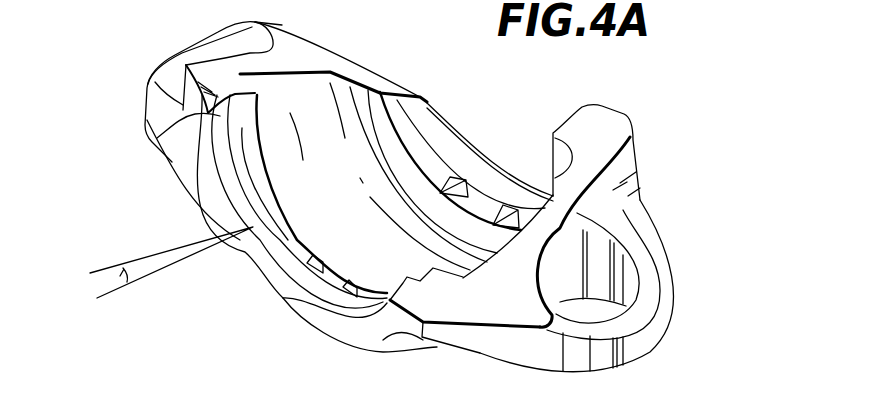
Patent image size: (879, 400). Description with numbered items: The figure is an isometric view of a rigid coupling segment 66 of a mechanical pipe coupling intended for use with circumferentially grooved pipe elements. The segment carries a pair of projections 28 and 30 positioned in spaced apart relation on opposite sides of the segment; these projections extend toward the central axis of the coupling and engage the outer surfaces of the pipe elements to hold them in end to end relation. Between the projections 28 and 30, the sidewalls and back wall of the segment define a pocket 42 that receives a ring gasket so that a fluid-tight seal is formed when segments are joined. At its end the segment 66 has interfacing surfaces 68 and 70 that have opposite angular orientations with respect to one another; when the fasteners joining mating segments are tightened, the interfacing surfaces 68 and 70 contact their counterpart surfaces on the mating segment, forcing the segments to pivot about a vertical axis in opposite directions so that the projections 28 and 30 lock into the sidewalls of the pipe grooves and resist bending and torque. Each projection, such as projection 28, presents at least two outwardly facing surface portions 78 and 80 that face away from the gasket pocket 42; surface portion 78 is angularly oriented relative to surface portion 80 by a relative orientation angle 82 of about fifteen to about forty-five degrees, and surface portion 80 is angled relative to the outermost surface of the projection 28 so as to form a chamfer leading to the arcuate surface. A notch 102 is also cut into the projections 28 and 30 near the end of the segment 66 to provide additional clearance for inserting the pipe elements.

The projection 28 is at (293, 300).
The projection 30 is at (433, 117).
The pocket 42 is at (330, 190).
The rigid coupling segment 66 is at (647, 80).
The interfacing surface 68 is at (325, 60).
The interfacing surface 70 is at (492, 293).
The outwardly facing surface portion 78 is at (233, 192).
The outwardly facing surface portion 80 is at (267, 255).
The relative orientation angle 82 is at (120, 276).
The notch 102 is at (157, 138).